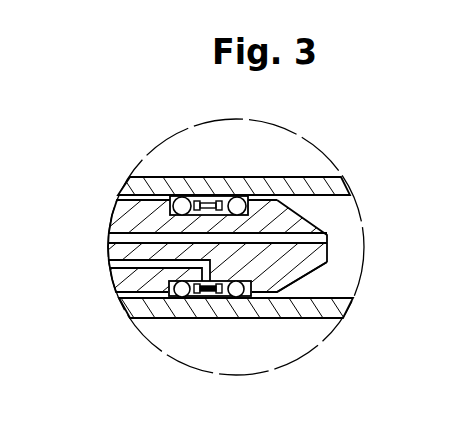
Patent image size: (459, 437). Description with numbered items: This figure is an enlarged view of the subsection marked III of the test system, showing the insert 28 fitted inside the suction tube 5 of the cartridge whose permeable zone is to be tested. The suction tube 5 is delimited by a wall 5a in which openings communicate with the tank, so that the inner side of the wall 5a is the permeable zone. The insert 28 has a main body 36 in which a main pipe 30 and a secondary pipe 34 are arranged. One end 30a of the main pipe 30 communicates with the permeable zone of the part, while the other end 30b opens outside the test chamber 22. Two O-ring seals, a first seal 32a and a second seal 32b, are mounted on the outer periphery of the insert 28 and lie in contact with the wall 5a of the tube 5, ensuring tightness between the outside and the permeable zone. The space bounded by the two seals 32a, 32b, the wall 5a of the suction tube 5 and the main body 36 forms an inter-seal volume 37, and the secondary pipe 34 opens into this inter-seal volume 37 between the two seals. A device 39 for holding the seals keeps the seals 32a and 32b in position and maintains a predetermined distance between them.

The suction tube 5 is at (337, 212).
The wall 5a is at (263, 177).
The test chamber 22 is at (347, 255).
The insert 28 is at (305, 258).
The main pipe 30 is at (167, 241).
The end of main pipe 30a is at (325, 239).
The other end of main pipe 30b is at (108, 238).
The first seal 32a is at (237, 197).
The second seal 32b is at (173, 196).
The secondary pipe 34 is at (109, 268).
The main body 36 is at (273, 280).
The inter-seal volume 37 is at (192, 318).
The device for holding the seals 39 is at (220, 318).
The section line III is at (173, 358).